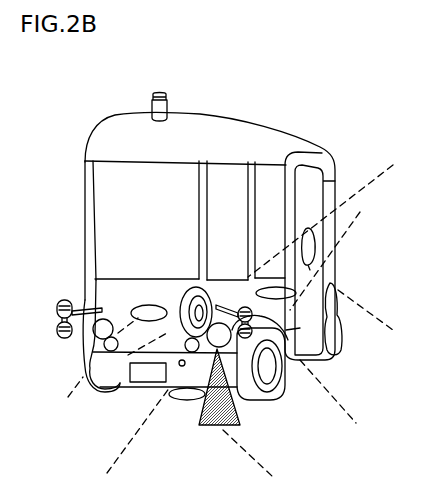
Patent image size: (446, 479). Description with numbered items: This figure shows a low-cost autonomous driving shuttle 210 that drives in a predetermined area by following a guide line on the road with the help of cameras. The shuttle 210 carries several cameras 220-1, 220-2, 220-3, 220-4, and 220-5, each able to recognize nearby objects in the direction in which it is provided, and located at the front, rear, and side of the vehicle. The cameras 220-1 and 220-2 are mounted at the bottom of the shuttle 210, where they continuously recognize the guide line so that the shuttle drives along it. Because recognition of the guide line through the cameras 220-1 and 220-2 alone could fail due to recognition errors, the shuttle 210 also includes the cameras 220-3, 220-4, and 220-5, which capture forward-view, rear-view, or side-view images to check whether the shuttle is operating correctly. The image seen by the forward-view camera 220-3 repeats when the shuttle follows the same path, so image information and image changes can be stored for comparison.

The autonomous driving shuttle 210 is at (198, 118).
The camera 220-1 is at (172, 398).
The camera 220-2 is at (278, 372).
The forward-view camera 220-3 is at (152, 306).
The camera 220-4 is at (337, 322).
The camera 220-5 is at (316, 248).